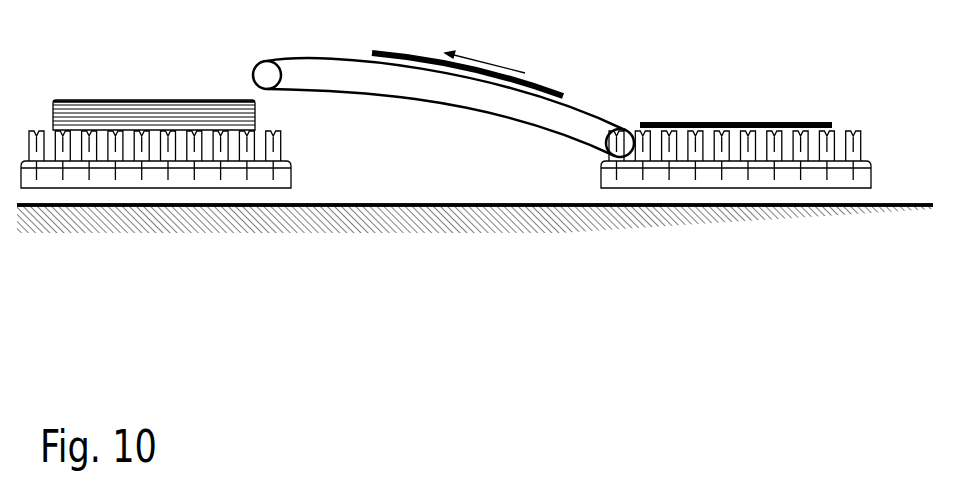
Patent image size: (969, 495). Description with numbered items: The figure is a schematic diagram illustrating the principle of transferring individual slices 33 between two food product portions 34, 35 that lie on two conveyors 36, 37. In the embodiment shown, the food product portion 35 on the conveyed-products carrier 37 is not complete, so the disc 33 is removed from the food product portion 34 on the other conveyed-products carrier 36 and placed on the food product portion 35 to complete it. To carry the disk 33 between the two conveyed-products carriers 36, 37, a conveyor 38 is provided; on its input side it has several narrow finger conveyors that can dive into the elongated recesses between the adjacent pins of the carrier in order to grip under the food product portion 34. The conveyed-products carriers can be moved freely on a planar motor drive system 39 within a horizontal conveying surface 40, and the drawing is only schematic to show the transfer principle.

The slice 33 is at (558, 87).
The food product portion 34 is at (761, 90).
The food product portion 35 is at (155, 93).
The conveyor 36 is at (733, 178).
The conveyor 37 is at (156, 180).
The conveyor 38 is at (335, 83).
The planar motor drive system 39 is at (418, 222).
The horizontal conveying surface 40 is at (340, 196).